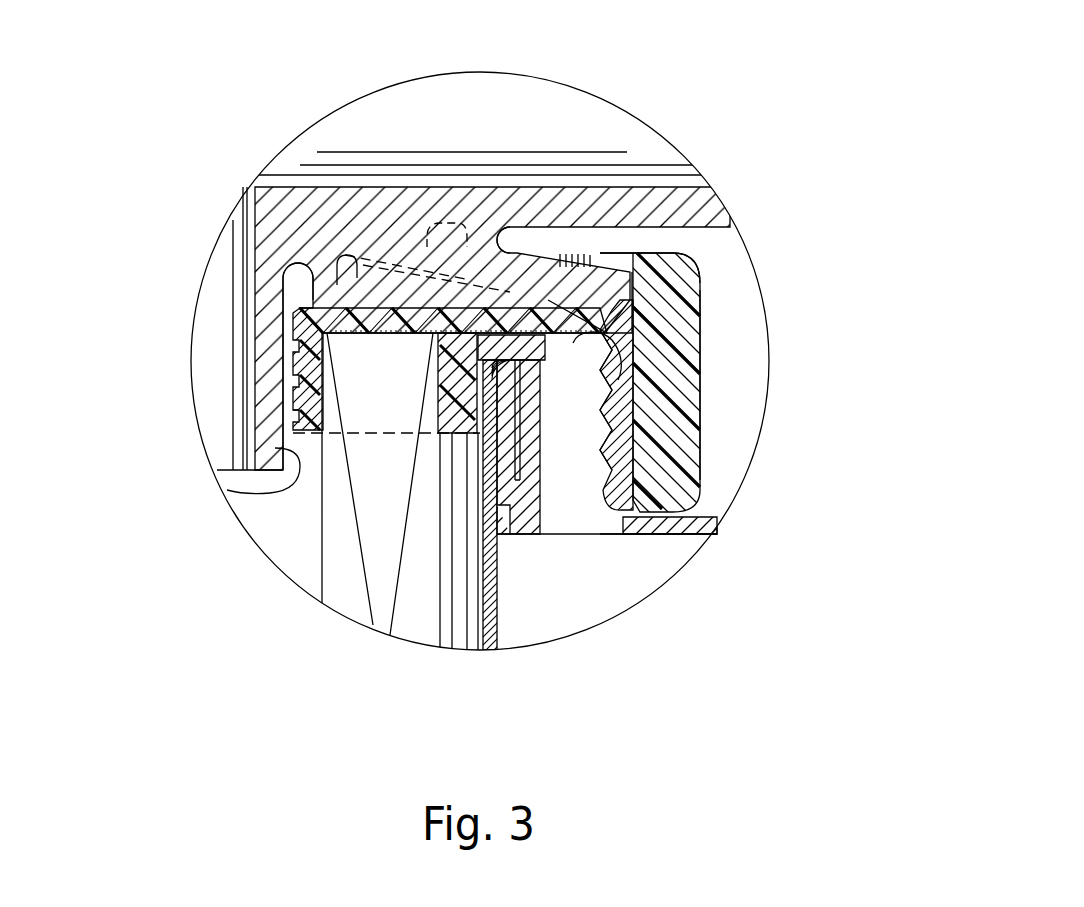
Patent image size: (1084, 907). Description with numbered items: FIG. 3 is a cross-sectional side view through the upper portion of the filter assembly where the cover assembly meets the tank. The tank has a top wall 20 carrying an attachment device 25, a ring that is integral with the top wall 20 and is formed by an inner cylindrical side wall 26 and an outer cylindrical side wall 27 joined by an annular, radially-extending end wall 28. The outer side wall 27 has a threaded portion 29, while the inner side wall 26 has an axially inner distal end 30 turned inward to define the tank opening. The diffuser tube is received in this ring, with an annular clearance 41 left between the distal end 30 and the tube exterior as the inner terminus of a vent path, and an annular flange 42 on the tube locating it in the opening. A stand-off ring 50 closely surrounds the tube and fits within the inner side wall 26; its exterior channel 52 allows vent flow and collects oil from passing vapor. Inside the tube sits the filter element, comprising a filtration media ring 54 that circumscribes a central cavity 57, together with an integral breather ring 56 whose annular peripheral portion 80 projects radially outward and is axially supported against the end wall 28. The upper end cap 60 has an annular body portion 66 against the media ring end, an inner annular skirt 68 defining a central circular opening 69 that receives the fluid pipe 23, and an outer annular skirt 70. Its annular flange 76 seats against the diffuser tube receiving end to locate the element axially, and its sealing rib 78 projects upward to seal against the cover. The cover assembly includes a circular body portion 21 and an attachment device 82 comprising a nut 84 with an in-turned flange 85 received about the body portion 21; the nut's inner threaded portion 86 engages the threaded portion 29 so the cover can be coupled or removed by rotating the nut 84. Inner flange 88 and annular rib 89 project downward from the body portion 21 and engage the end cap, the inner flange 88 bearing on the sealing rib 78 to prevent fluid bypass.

The top wall 20 is at (720, 525).
The circular body portion 21 is at (380, 307).
The fluid pipe 23 is at (227, 490).
The attachment device 25 is at (600, 522).
The inner cylindrical side wall 26 is at (645, 507).
The outer cylindrical side wall 27 is at (620, 440).
The end wall 28 is at (635, 360).
The threaded portion 29 is at (630, 410).
The axially inner distal end 30 is at (537, 534).
The annular clearance 41 is at (497, 538).
The annular flange 42 is at (558, 255).
The stand-off ring 50 is at (499, 536).
The exterior channel 52 is at (612, 465).
The filtration media ring 54 is at (322, 545).
The breather ring 56 is at (603, 283).
The central cavity 57 is at (294, 531).
The upper end cap 60 is at (295, 310).
The annular body portion 66 is at (345, 268).
The inner annular skirt 68 is at (295, 422).
The central circular opening 69 is at (293, 348).
The outer annular skirt 70 is at (447, 432).
The annular flange 76 is at (605, 262).
The sealing rib 78 is at (283, 265).
The annular peripheral portion 80 is at (720, 262).
The attachment device 82 is at (720, 300).
The nut 84 is at (625, 330).
The in-turned flange 85 is at (575, 278).
The inner threaded portion 86 is at (615, 385).
The inner flange 88 is at (300, 275).
The annular rib 89 is at (473, 282).